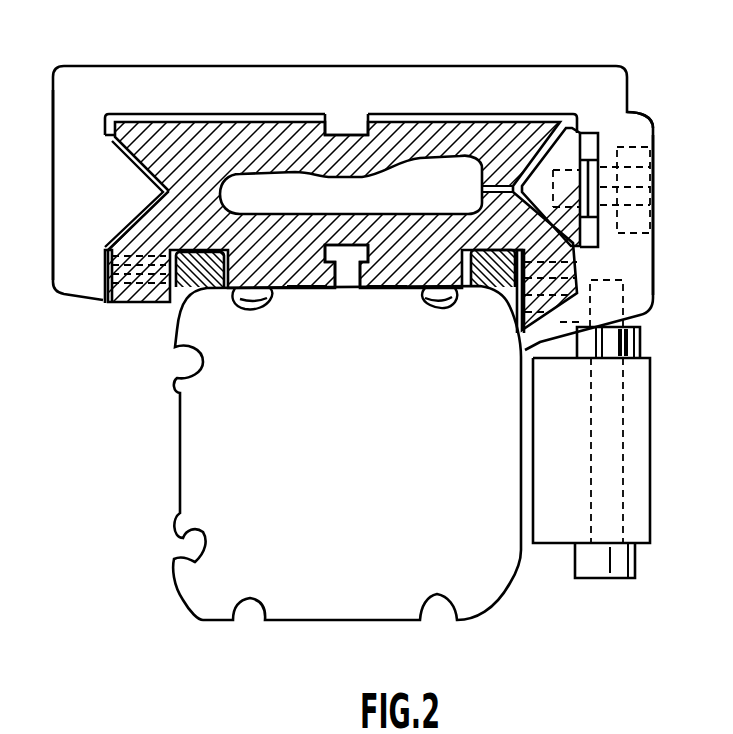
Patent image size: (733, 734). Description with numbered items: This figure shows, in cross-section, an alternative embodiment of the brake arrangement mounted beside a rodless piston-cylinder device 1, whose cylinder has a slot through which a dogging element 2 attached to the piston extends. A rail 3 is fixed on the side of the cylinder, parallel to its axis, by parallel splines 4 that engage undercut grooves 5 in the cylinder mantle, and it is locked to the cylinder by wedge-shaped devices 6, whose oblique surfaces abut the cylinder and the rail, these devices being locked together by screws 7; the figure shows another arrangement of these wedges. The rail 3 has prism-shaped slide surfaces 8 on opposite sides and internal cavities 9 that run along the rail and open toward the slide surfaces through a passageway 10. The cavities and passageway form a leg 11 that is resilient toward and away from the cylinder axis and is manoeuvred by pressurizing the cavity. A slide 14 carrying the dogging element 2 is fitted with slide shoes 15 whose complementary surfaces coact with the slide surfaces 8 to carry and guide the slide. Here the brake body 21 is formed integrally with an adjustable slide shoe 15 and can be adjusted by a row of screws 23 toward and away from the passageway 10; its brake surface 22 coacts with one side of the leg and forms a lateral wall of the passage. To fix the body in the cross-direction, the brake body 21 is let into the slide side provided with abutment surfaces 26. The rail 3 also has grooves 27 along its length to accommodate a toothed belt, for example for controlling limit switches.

The piston-cylinder device 1 is at (210, 600).
The dogging element 2 is at (643, 493).
The rail 3 is at (217, 135).
The splines 4 is at (270, 298).
The undercut grooves 5 is at (245, 310).
The wedge-shaped devices 6 is at (213, 288).
The screws 7 is at (112, 272).
The slide surfaces 8 is at (137, 208).
The cavities 9 is at (280, 183).
The passageway 10 is at (482, 188).
The leg 11 is at (403, 127).
The slide 14 is at (143, 80).
The slide shoes 15 is at (70, 207).
The brake body 21 is at (628, 117).
The brake surface 22 is at (540, 153).
The screws 23 is at (657, 183).
The abutment surfaces 26 is at (580, 130).
The grooves 27 is at (340, 130).